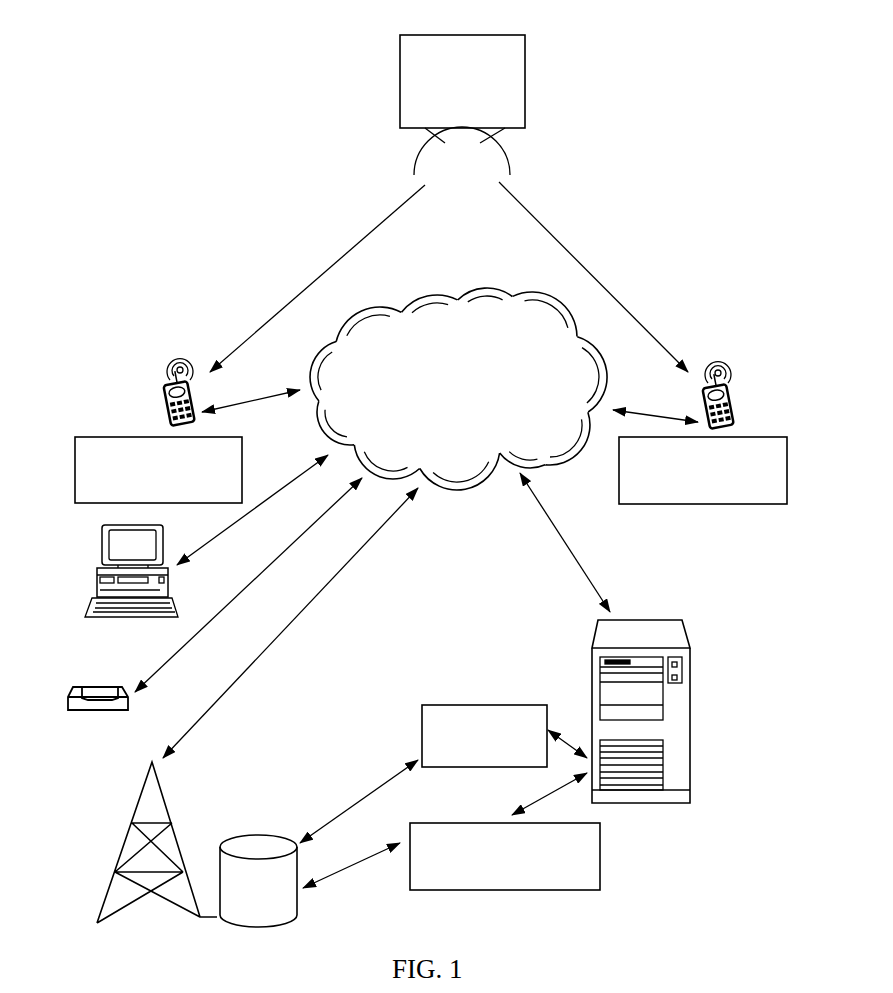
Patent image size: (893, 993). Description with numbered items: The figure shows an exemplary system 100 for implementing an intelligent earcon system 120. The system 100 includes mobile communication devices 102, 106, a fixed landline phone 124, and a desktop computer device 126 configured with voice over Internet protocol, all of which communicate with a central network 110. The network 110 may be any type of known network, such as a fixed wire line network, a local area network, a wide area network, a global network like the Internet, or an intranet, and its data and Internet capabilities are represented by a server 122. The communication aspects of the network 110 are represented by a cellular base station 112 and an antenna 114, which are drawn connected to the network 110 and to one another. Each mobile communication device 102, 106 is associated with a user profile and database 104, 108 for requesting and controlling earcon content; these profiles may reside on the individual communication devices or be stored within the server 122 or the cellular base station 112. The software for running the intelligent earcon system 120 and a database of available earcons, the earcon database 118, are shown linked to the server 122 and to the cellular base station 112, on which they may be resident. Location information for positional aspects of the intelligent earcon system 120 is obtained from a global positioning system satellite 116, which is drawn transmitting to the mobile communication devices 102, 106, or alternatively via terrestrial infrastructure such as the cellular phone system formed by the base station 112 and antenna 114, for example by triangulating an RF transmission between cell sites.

The system 100 is at (282, 222).
The mobile communication device 102 is at (163, 390).
The user profile and database 104 is at (148, 437).
The mobile communication device 106 is at (732, 402).
The user profile and database 108 is at (702, 504).
The network 110 is at (475, 291).
The cellular base station 112 is at (273, 838).
The antenna 114 is at (137, 800).
The global positioning system satellite 116 is at (402, 67).
The earcon database 118 is at (463, 705).
The intelligent earcon system 120 is at (452, 890).
The server 122 is at (690, 743).
The fixed landline phone 124 is at (103, 685).
The desktop computer device 126 is at (102, 570).